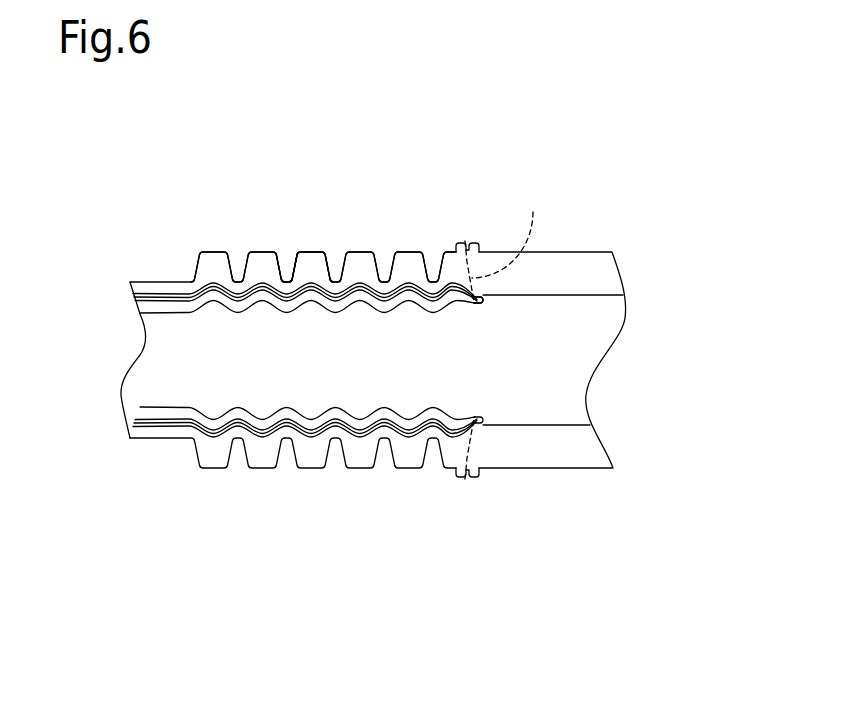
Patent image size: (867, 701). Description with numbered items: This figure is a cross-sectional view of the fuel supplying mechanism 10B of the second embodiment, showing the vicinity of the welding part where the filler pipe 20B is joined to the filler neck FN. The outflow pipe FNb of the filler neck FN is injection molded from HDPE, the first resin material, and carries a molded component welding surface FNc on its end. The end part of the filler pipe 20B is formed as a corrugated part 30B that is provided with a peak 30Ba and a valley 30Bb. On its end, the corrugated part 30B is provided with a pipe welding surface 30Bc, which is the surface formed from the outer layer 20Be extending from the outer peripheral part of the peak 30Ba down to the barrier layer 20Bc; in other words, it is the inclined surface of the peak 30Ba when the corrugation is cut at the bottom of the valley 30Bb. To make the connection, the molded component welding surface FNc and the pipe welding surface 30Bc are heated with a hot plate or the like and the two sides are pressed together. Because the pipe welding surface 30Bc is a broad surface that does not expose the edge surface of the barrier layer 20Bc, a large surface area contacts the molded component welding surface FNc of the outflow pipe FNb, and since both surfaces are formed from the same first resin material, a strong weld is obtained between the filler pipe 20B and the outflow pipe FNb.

The fuel supplying mechanism 10B is at (430, 148).
The filler pipe 20B is at (203, 232).
The barrier layer 20Bc is at (482, 300).
The outer layer 20Be is at (452, 257).
The corrugated part 30B is at (367, 196).
The peak 30Ba is at (313, 258).
The valley 30Bb is at (287, 278).
The pipe welding surface 30Bc is at (521, 226).
The filler neck FN is at (570, 326).
The outflow pipe FNb is at (578, 251).
The molded component welding surface FNc is at (465, 241).